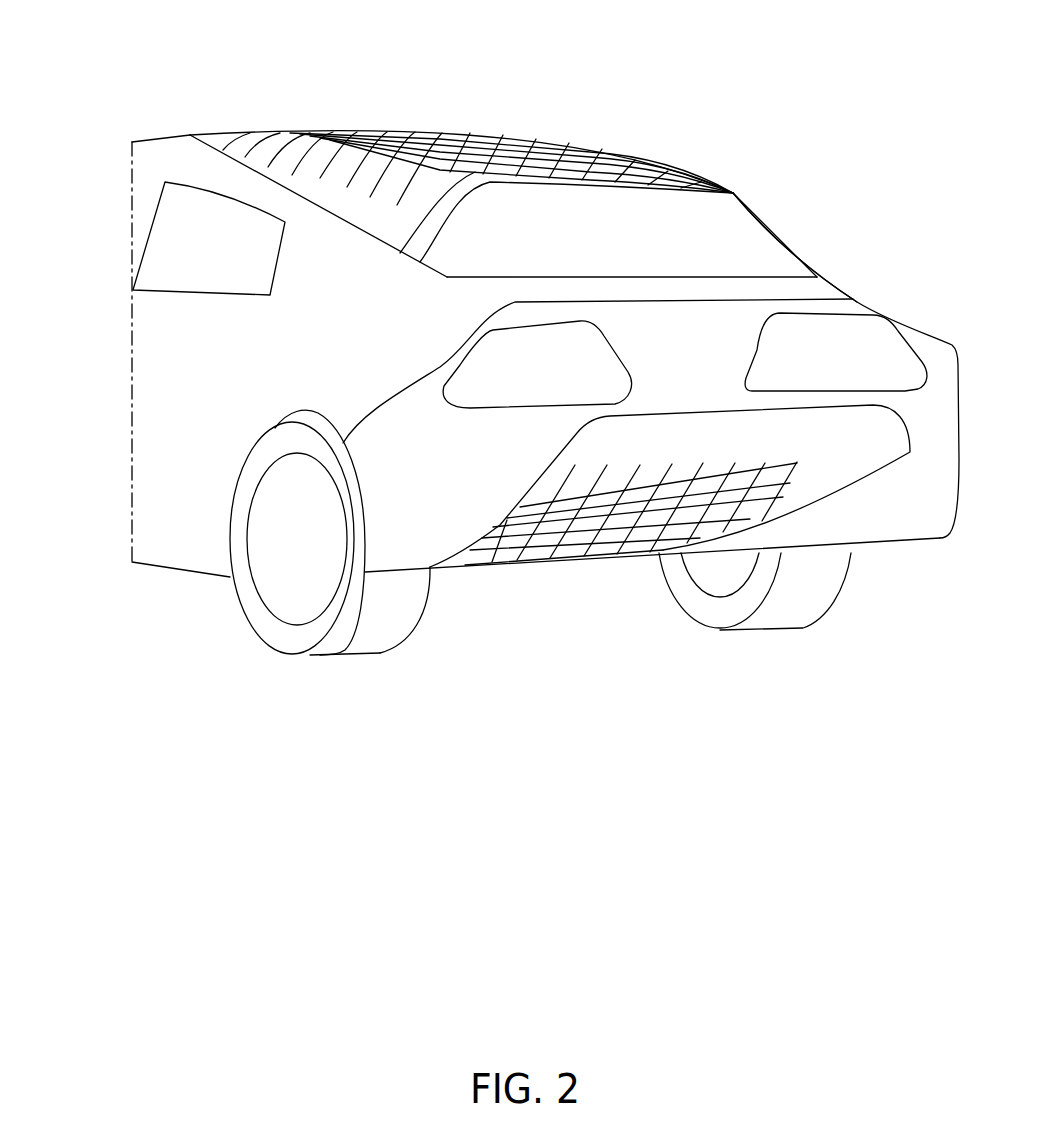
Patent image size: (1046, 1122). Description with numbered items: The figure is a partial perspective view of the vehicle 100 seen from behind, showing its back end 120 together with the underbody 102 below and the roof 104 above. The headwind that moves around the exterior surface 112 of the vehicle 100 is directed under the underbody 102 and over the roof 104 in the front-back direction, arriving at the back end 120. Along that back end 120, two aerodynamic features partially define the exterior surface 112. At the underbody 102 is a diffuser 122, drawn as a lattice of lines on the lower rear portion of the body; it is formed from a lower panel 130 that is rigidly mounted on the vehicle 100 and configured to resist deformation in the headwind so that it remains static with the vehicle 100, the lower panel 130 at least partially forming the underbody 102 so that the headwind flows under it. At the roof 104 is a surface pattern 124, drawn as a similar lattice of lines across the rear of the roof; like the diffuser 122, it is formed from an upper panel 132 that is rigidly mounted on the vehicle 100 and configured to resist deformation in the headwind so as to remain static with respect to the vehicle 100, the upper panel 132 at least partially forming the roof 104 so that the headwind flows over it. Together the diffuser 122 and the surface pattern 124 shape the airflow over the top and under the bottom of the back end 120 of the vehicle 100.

The vehicle 100 is at (208, 65).
The underbody 102 is at (450, 568).
The roof 104 is at (160, 137).
The exterior surface 112 is at (765, 222).
The back end 120 is at (685, 124).
The diffuser 122 is at (653, 553).
The surface pattern 124 is at (470, 135).
The lower panel 130 is at (833, 465).
The upper panel 132 is at (323, 192).